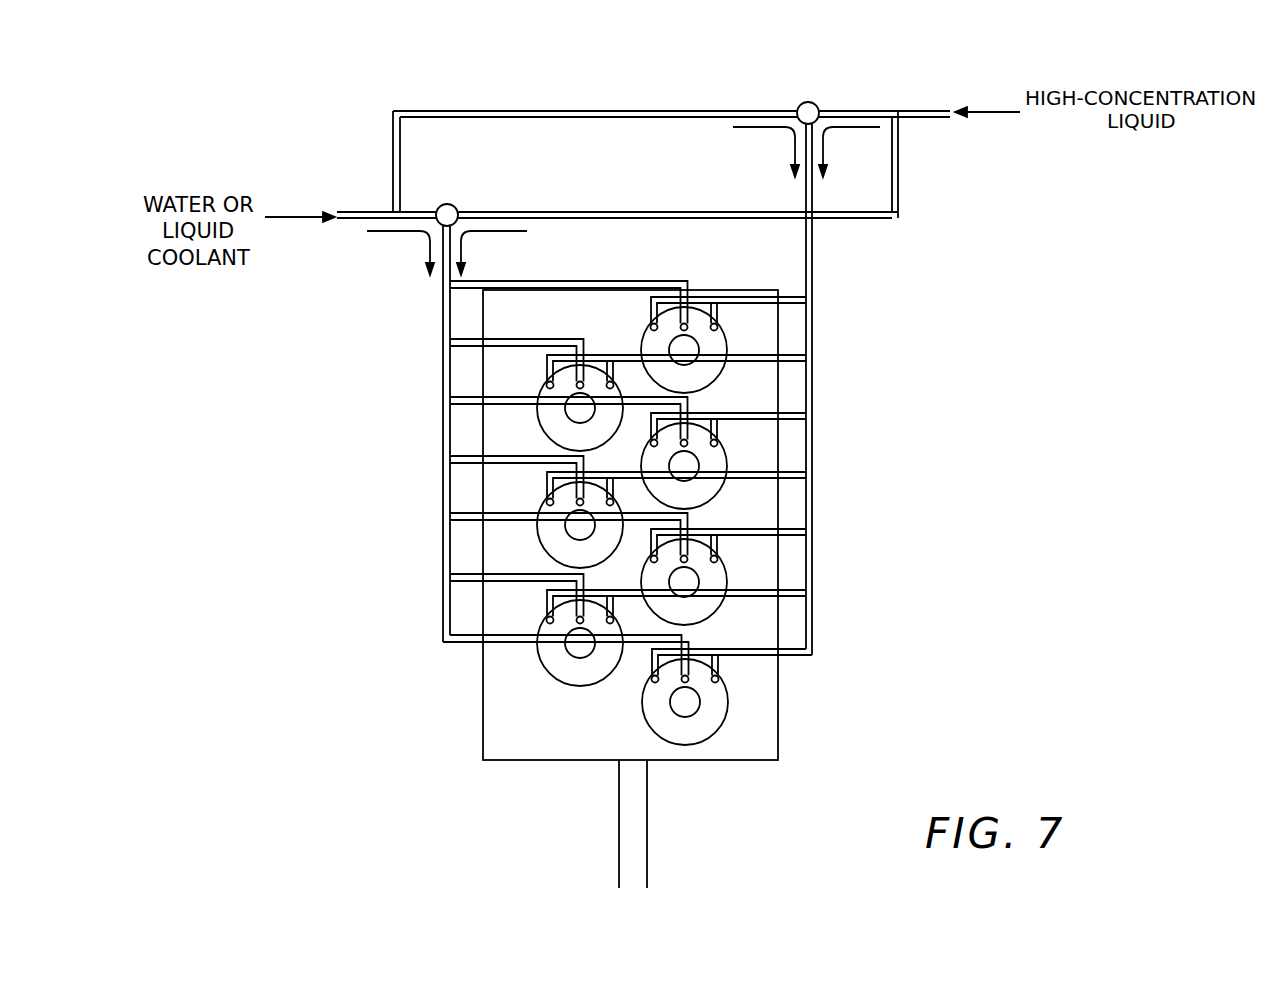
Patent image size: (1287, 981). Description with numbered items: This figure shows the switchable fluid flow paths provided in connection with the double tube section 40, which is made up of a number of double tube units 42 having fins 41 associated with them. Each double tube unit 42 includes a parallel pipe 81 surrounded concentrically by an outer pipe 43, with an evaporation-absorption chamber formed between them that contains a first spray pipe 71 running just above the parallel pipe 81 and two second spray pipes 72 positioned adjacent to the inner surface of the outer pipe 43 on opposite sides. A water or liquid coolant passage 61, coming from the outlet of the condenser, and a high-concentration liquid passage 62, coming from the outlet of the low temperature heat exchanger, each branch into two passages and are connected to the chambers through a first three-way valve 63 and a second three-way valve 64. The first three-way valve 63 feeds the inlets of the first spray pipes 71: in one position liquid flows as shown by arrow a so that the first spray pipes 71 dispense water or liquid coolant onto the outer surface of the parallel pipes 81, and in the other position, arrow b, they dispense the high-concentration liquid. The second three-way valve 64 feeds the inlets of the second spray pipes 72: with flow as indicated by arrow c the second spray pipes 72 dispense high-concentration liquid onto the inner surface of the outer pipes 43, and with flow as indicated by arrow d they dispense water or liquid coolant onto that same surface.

The double tube section 40 is at (690, 78).
The fins 41 is at (779, 677).
The double tube unit 42 is at (746, 730).
The outer pipe 43 is at (685, 746).
The water or liquid coolant passage 61 is at (348, 211).
The high-concentration liquid passage 62 is at (916, 110).
The first three-way valve 63 is at (456, 205).
The second three-way valve 64 is at (812, 102).
The first spray pipe 71 is at (649, 719).
The second spray pipes 72 is at (652, 682).
The parallel pipe 81 is at (690, 718).